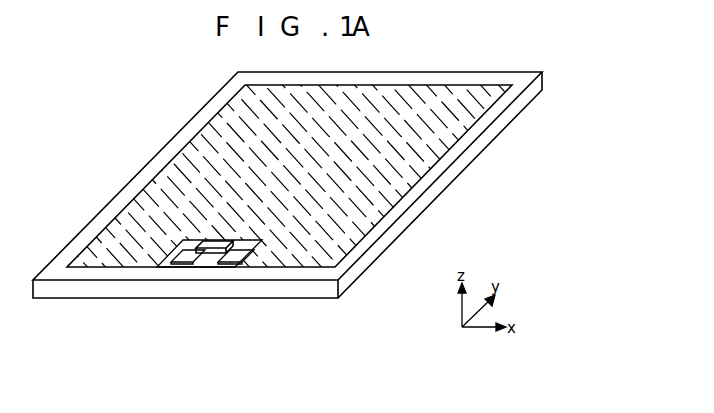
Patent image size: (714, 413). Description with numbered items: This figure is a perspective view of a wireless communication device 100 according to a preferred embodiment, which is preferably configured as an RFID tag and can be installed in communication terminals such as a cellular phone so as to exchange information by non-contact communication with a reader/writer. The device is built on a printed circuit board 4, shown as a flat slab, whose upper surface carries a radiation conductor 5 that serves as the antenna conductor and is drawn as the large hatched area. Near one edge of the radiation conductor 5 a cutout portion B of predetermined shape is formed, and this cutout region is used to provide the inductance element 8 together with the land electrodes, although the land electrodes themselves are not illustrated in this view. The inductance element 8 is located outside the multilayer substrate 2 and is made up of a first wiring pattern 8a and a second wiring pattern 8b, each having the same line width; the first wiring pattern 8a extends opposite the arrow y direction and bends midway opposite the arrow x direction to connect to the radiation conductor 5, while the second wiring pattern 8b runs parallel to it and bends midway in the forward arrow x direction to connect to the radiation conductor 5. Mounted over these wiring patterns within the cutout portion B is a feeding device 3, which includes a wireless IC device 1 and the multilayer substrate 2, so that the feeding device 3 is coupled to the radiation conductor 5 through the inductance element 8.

The wireless communication device 100 is at (112, 97).
The wireless IC device 1 is at (197, 240).
The multilayer substrate 2 is at (200, 250).
The feeding device 3 is at (122, 217).
The printed circuit board 4 is at (362, 265).
The radiation conductor 5 is at (424, 152).
The inductance element 8 is at (203, 316).
The first wiring pattern 8a is at (177, 262).
The second wiring pattern 8b is at (241, 296).
The cutout portion B is at (250, 244).